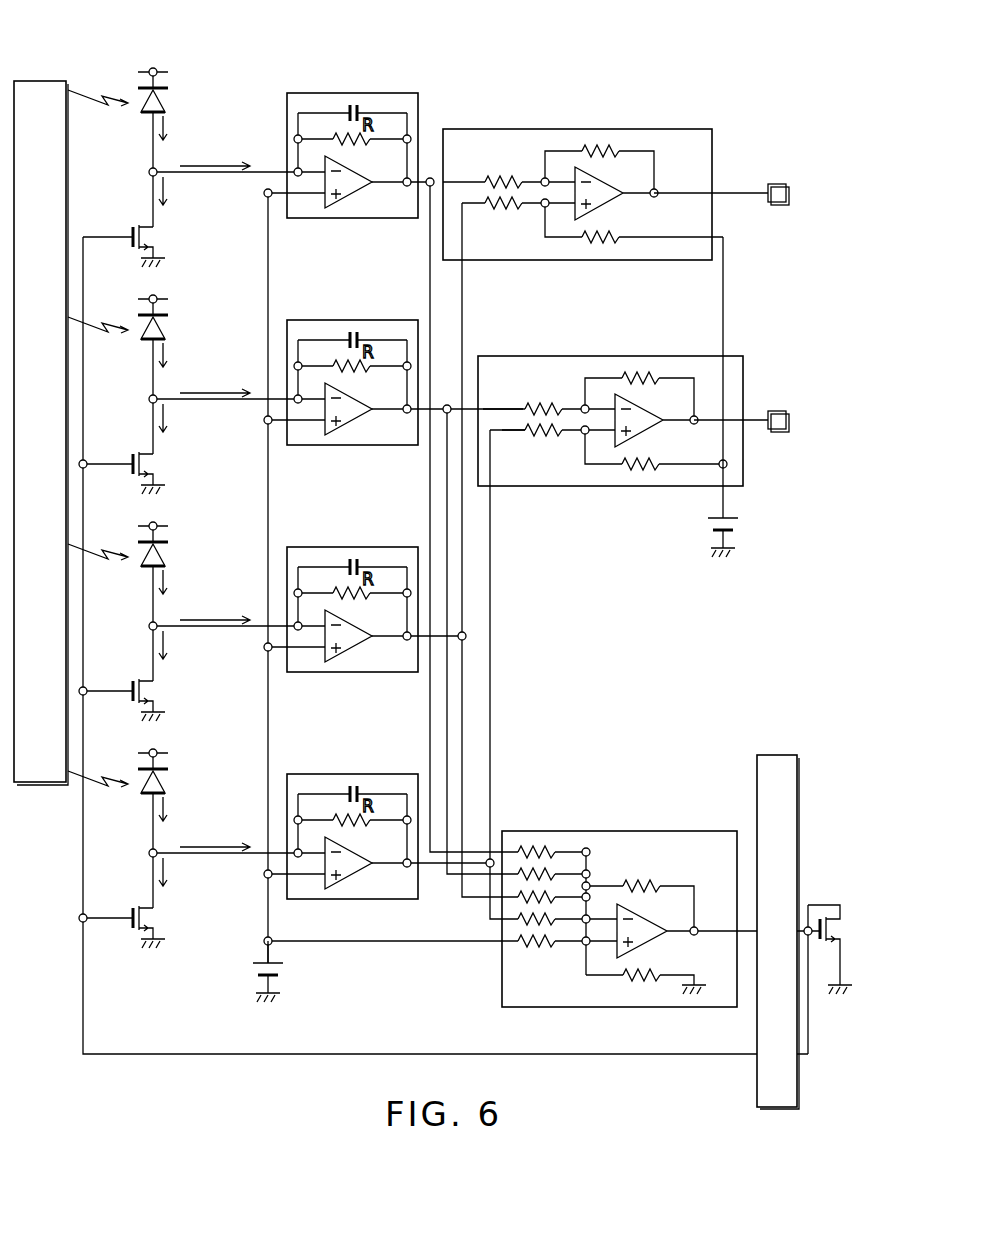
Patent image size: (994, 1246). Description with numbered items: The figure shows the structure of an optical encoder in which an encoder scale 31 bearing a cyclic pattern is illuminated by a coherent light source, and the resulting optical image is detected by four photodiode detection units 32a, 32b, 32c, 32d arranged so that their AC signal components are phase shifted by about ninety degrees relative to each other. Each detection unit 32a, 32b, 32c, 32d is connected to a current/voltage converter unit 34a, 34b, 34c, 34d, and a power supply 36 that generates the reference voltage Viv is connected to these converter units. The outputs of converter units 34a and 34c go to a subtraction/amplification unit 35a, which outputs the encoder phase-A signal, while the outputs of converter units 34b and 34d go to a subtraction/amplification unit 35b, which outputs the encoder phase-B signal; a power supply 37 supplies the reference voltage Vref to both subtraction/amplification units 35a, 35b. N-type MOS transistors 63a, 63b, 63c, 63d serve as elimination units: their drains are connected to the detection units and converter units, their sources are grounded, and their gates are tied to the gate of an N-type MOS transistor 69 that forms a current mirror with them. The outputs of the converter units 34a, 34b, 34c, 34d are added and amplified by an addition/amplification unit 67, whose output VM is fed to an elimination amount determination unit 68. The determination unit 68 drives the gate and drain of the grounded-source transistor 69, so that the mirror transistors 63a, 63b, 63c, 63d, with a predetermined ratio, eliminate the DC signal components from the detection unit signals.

The encoder scale 31 is at (40, 81).
The detection unit 32a is at (174, 96).
The detection unit 32b is at (167, 363).
The detection unit 32c is at (167, 590).
The detection unit 32d is at (167, 817).
The current/voltage converter unit 34a is at (385, 92).
The current/voltage converter unit 34b is at (353, 355).
The current/voltage converter unit 34c is at (352, 582).
The current/voltage converter unit 34d is at (353, 809).
The subtraction/amplification unit 35a is at (647, 128).
The subtraction/amplification unit 35b is at (647, 355).
The power supply 36 is at (252, 968).
The power supply 37 is at (700, 522).
The N-type MOS transistor 63a is at (165, 238).
The N-type MOS transistor 63b is at (181, 473).
The N-type MOS transistor 63c is at (180, 700).
The N-type MOS transistor 63d is at (181, 927).
The addition/amplification unit 67 is at (672, 831).
The elimination amount determination unit 68 is at (775, 755).
The N-type MOS transistor 69 is at (841, 928).